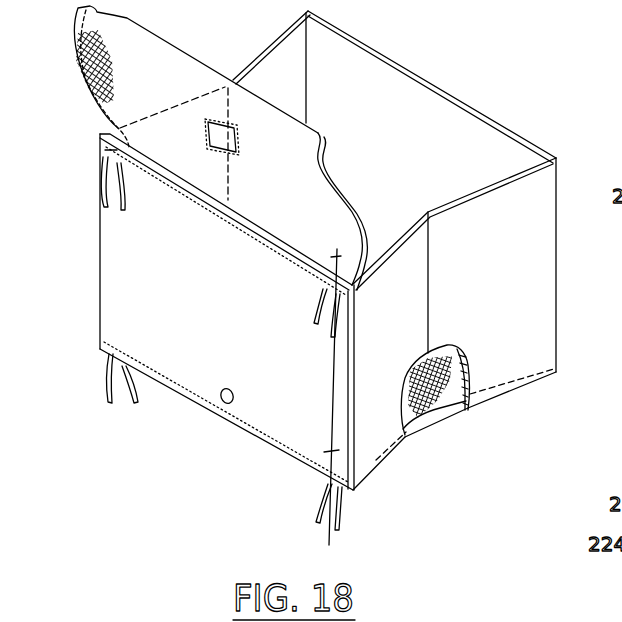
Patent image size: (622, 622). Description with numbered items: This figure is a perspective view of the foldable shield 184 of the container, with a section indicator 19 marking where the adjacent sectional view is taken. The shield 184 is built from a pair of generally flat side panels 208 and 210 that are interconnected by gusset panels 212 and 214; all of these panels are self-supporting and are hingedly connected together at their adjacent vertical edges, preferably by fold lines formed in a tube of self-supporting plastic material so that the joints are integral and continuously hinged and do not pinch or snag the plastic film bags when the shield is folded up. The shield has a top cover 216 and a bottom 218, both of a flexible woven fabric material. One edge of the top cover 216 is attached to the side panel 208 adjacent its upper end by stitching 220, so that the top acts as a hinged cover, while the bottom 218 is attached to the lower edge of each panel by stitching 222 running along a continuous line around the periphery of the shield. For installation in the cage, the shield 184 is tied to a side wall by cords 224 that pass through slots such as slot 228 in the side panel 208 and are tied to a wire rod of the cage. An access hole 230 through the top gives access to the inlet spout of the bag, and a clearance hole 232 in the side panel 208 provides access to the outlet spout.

The foldable shield 184 is at (434, 26).
The side panel 208 is at (114, 290).
The side panel 210 is at (444, 92).
The gusset panel 212 is at (378, 444).
The gusset panel 214 is at (544, 338).
The top cover 216 is at (84, 84).
The bottom 218 is at (448, 397).
The stitching 220 is at (288, 252).
The stitching 222 is at (287, 455).
The cords 224 is at (100, 203).
The slot 228 is at (106, 149).
The access hole 230 is at (207, 133).
The clearance hole 232 is at (222, 409).
The section line 19- 19 is at (336, 249).